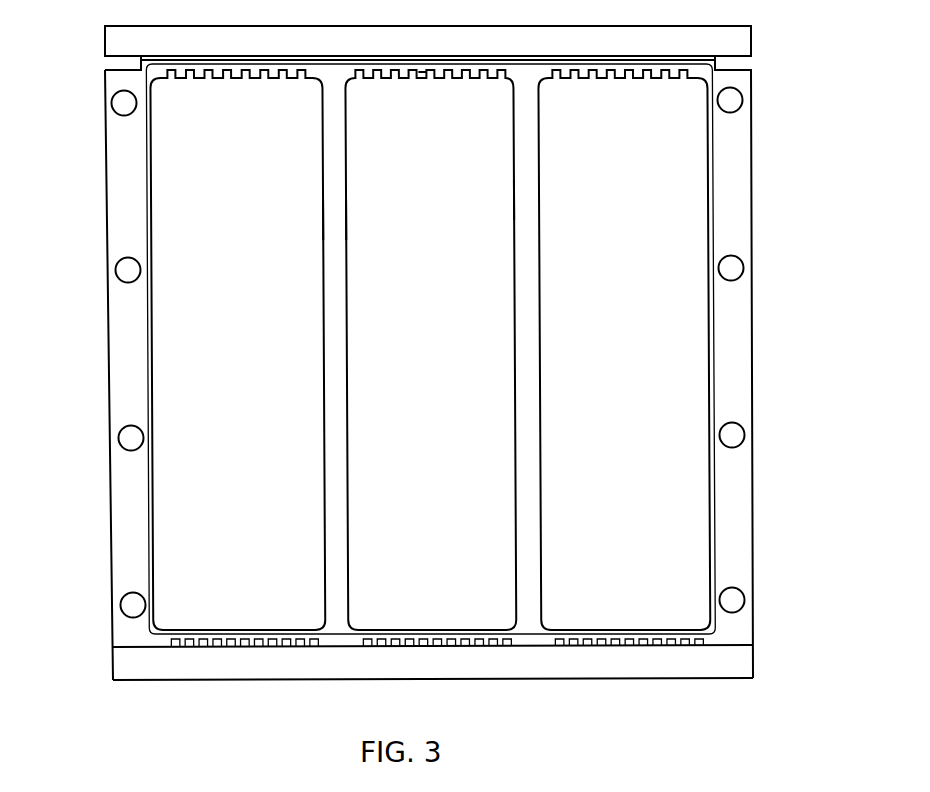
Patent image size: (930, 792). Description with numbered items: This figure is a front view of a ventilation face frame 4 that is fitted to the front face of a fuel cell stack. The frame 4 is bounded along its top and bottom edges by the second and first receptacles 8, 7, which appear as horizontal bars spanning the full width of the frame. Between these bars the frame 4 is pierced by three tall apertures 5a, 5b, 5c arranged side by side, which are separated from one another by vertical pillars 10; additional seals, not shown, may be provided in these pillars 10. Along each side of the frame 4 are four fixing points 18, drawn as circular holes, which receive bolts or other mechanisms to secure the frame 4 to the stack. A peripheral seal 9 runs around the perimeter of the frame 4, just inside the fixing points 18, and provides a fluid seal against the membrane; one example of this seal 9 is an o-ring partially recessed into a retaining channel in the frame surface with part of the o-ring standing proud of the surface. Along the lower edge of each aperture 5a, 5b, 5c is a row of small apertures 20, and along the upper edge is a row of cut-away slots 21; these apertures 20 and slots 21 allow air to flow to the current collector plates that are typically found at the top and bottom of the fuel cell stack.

The frame 4 is at (740, 143).
The aperture 5a is at (252, 368).
The aperture 5b is at (444, 368).
The aperture 5c is at (626, 368).
The first receptacle 7 is at (131, 667).
The second receptacle 8 is at (115, 42).
The peripheral seal 9 is at (712, 303).
The pillar 10 is at (333, 218).
The fixing point 18 is at (128, 270).
The aperture 20 is at (448, 642).
The cut-away slot 21 is at (418, 72).